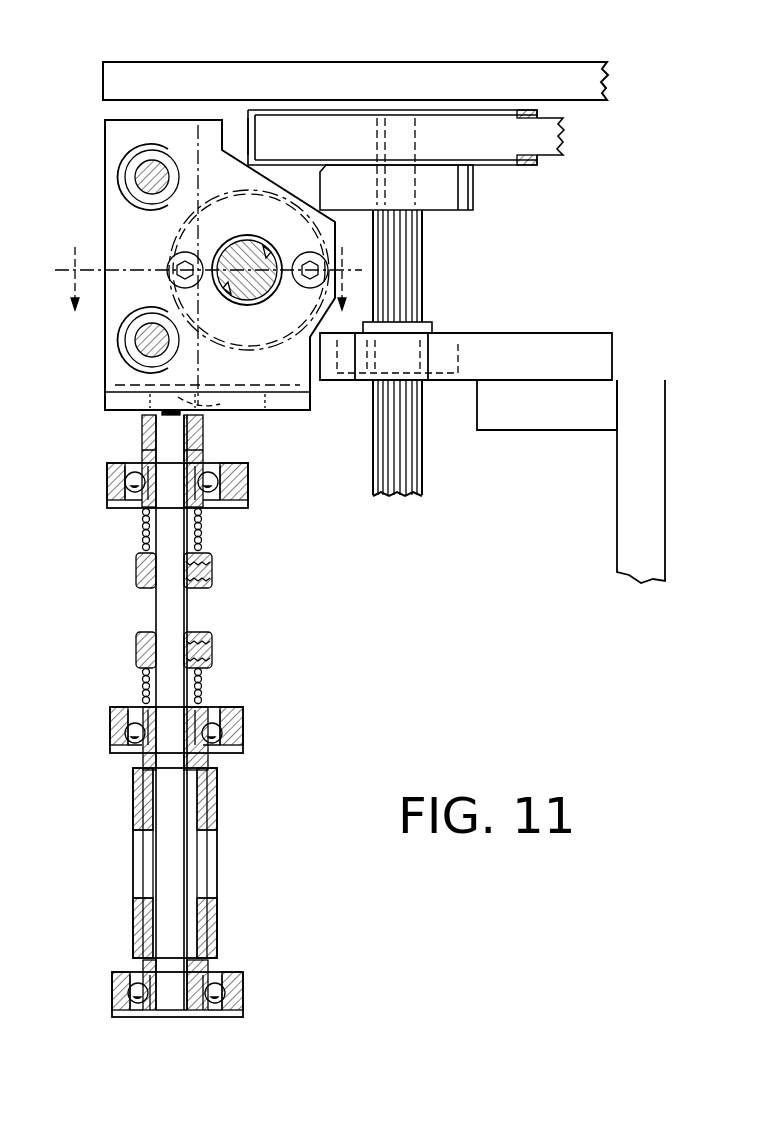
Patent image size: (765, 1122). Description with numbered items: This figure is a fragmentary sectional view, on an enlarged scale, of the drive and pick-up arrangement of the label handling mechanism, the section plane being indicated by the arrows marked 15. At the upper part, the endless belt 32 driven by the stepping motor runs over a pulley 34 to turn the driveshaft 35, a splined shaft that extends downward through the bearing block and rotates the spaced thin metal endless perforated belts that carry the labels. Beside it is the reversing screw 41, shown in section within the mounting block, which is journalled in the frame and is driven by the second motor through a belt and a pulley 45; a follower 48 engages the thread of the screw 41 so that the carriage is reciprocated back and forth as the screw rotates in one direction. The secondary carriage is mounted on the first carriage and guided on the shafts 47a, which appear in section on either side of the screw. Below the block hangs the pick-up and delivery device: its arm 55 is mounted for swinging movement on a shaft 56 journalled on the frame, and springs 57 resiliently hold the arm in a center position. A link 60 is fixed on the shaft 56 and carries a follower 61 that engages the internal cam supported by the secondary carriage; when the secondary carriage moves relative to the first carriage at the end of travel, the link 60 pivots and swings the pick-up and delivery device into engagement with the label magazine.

The section line 15- 15 is at (216, 295).
The endless belt 32 is at (540, 148).
The pulley 34 is at (468, 118).
The driveshaft 35 is at (424, 285).
The reversing screw 41 is at (226, 240).
The pulley 45 is at (120, 308).
The shafts 47a is at (143, 170).
The follower 48 is at (263, 212).
The arm 55 is at (132, 812).
The shaft 56 is at (168, 603).
The springs 57 is at (205, 688).
The link 60 is at (142, 438).
The follower 61 is at (224, 412).